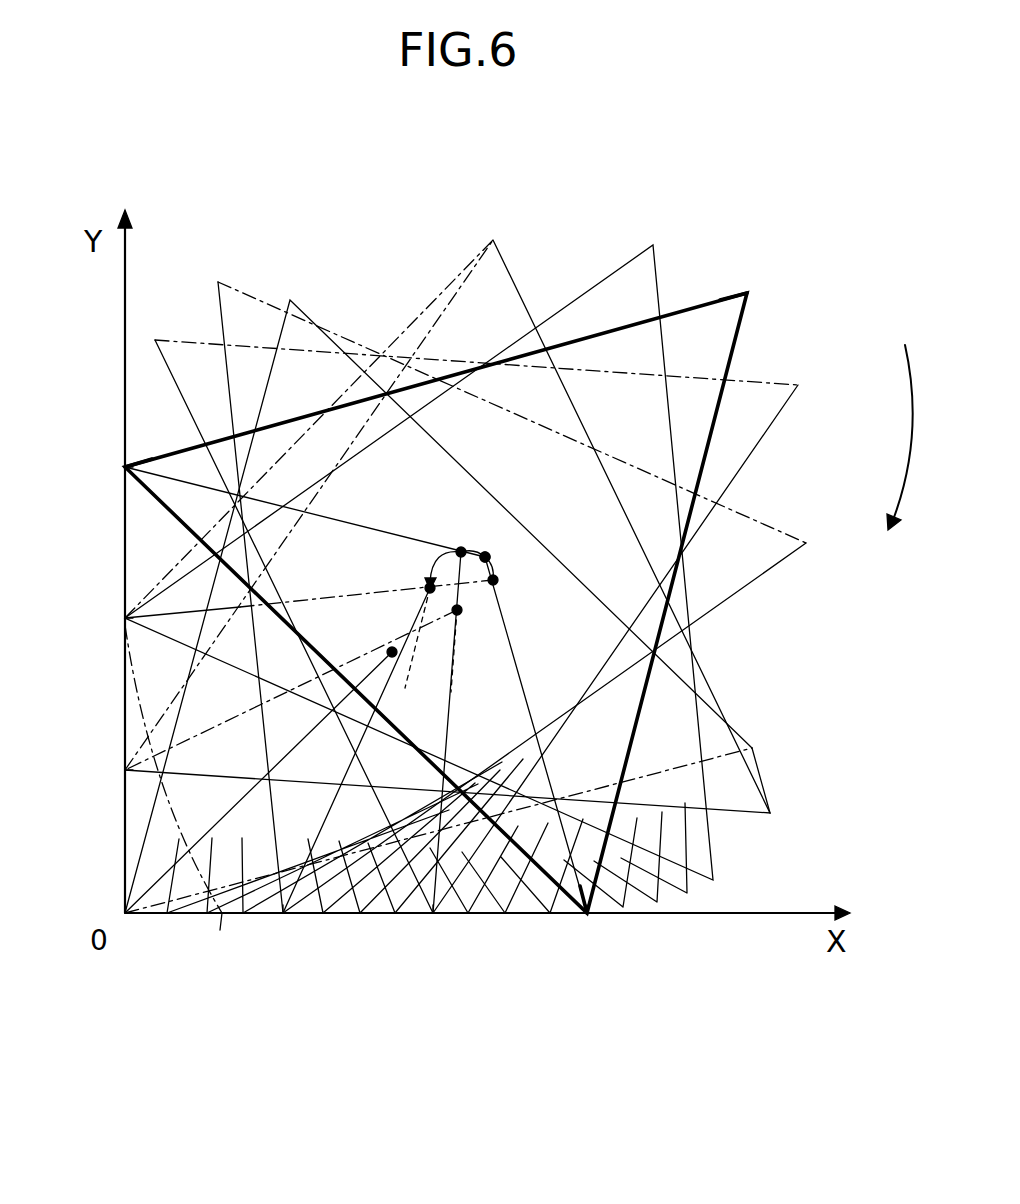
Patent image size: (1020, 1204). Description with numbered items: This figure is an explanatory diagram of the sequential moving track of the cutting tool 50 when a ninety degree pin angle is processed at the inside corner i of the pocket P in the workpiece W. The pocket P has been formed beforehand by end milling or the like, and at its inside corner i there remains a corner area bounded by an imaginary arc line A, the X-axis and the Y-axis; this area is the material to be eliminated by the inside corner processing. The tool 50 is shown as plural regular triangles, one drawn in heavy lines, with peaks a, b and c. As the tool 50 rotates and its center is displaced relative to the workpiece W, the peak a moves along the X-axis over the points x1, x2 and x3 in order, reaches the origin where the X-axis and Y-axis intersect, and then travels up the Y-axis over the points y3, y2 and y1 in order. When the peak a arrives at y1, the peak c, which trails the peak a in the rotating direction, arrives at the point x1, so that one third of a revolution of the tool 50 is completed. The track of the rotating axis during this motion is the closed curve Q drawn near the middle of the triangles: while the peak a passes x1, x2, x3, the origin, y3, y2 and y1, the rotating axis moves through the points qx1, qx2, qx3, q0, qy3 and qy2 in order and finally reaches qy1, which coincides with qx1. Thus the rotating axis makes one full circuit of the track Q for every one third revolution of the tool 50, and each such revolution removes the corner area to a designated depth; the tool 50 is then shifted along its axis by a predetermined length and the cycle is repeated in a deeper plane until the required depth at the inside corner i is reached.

The cutting tool 50 is at (705, 468).
The workpiece W is at (783, 690).
The pocket P is at (774, 775).
The imaginary arc line A is at (221, 925).
The moving track of the rotating axis Q is at (428, 703).
The inside corner i is at (173, 826).
The peak a is at (588, 915).
The peak b is at (118, 460).
The peak c is at (747, 292).
The rotating axis point q0 is at (390, 650).
The rotating axis point qx1 is at (488, 555).
The rotating axis point qy1 is at (538, 543).
The rotating axis point qx2 is at (460, 547).
The rotating axis point qy2 is at (497, 584).
The rotating axis point qx3 is at (426, 586).
The rotating axis point qy3 is at (459, 614).
The point on the X-axis x1 is at (590, 933).
The point on the X-axis x2 is at (428, 933).
The point on the X-axis x3 is at (280, 933).
The point on the Y-axis y1 is at (106, 469).
The point on the Y-axis y2 is at (106, 627).
The point on the Y-axis y3 is at (106, 774).